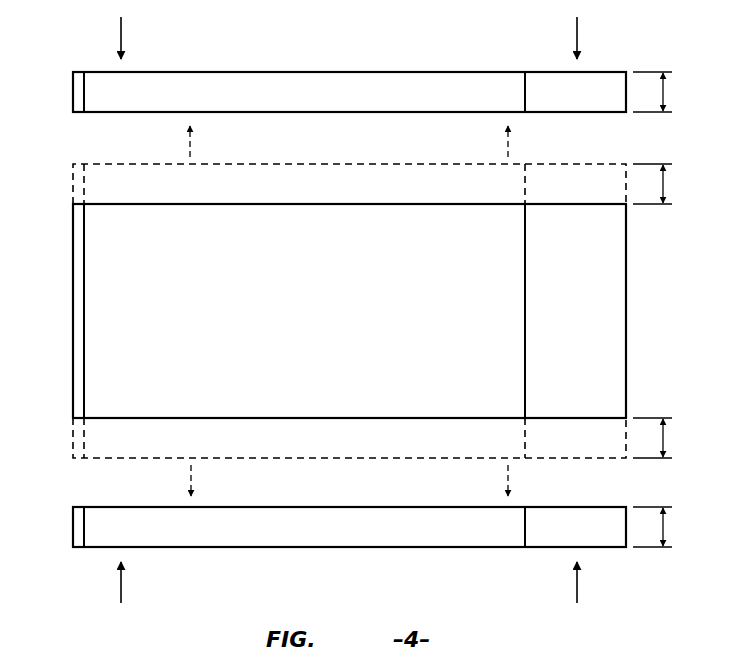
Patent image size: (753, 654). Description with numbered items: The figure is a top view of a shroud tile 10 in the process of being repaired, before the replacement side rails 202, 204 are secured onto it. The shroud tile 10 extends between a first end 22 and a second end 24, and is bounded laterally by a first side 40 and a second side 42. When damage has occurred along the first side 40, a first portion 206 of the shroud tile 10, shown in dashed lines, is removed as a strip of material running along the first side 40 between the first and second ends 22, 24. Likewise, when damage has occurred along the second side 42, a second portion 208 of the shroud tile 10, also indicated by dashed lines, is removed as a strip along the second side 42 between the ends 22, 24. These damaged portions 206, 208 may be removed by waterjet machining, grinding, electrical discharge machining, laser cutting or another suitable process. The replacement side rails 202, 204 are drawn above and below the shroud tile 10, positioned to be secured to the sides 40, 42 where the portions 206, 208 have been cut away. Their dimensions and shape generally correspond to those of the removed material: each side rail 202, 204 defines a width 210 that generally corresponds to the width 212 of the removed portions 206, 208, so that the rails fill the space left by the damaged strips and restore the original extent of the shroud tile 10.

The shroud tile 10 is at (351, 312).
The first end 22 is at (72, 287).
The second end 24 is at (627, 320).
The first side 40 is at (363, 419).
The second side 42 is at (363, 203).
The replacement side rail 202 is at (405, 553).
The replacement side rail 204 is at (405, 69).
The first portion 206 is at (302, 459).
The second portion 208 is at (302, 163).
The width 210 is at (664, 93).
The width 212 is at (664, 185).